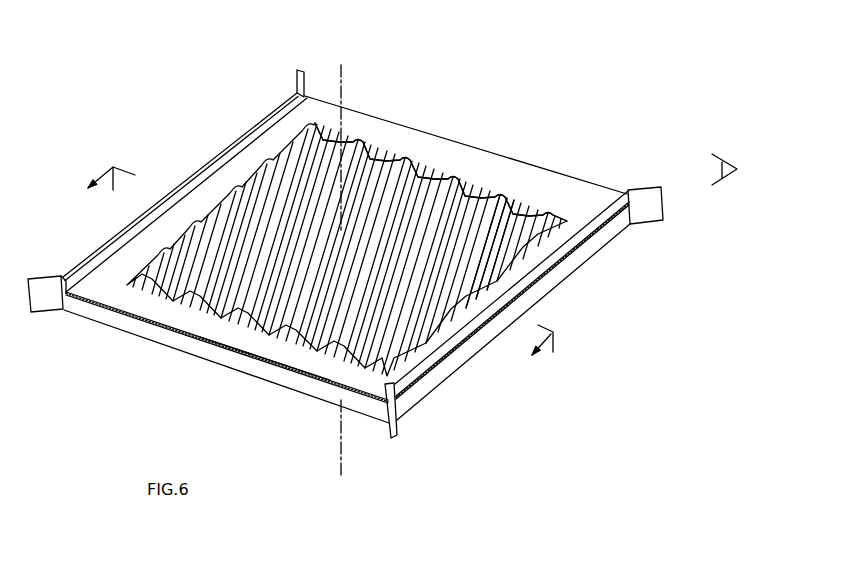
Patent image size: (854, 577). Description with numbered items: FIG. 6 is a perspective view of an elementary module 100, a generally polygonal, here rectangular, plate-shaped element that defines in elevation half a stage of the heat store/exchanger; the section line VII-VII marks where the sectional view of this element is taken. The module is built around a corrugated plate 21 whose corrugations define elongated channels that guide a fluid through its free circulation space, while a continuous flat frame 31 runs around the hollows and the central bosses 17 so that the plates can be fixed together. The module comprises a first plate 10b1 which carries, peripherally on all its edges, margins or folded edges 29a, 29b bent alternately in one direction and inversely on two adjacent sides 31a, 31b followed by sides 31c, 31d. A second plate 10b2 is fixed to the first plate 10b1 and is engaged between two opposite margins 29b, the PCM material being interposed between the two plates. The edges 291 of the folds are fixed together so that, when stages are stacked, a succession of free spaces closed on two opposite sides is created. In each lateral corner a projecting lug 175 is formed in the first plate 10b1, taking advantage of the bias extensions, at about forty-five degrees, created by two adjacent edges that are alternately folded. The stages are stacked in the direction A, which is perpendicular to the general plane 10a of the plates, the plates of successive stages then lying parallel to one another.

The elementary module 100 is at (207, 160).
The general plane 10a is at (725, 186).
The first plate 10b1 is at (208, 366).
The second plate 10b2 is at (445, 160).
The bosses 17 is at (540, 185).
The corrugated plate 21 is at (394, 123).
The margin 29a is at (293, 380).
The margin 29b is at (162, 207).
The edges of the folds 291 is at (323, 404).
The continuous flat frame 31 is at (265, 347).
The side 31a is at (68, 271).
The side 31b is at (115, 320).
The side 31c is at (527, 282).
The side 31d is at (507, 217).
The projecting lug 175 is at (389, 437).
The stacking direction A is at (343, 93).
The section line VII- VII is at (307, 275).